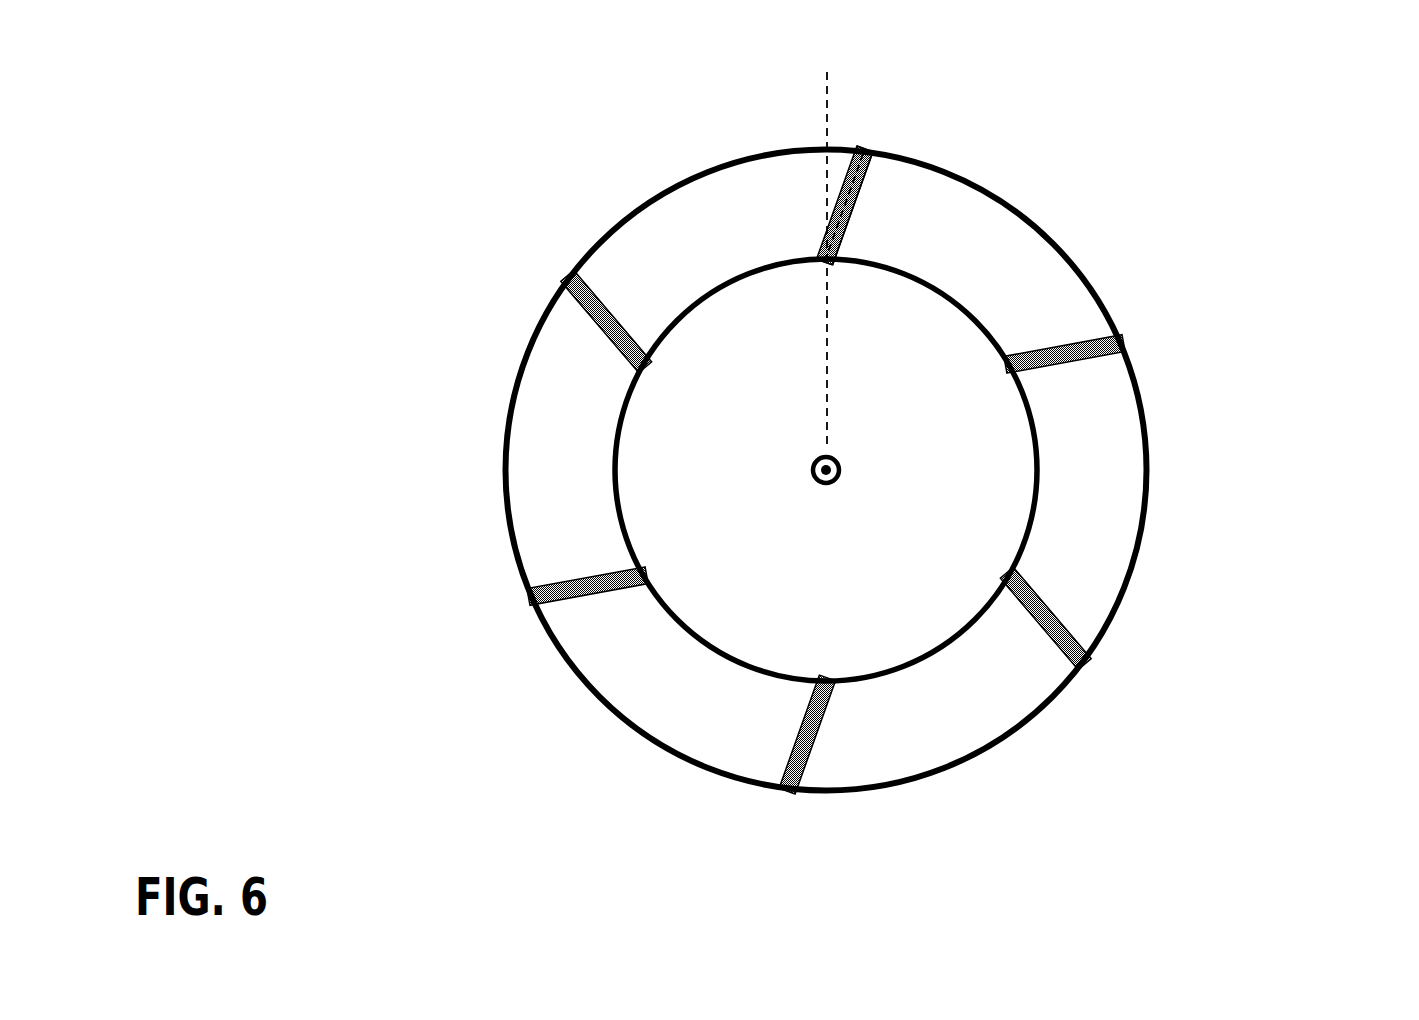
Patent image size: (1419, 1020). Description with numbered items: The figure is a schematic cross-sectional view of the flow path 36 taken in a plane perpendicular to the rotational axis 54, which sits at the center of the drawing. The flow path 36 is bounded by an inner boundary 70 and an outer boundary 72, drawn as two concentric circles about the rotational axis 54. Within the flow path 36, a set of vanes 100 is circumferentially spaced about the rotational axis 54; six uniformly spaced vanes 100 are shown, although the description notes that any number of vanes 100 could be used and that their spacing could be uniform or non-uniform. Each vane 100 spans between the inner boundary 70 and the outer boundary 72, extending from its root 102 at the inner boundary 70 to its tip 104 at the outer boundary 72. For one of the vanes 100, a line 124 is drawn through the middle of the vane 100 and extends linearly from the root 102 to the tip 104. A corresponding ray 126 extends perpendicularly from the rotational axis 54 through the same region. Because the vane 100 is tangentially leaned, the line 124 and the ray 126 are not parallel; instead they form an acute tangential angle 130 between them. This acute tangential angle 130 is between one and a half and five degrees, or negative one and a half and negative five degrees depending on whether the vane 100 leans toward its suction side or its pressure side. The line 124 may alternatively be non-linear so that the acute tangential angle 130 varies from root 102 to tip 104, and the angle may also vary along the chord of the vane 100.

The flow path 36 is at (401, 90).
The rotational axis 54 is at (843, 469).
The inner ring 70 is at (613, 420).
The outer ring 72 is at (617, 218).
The vane 100 is at (857, 202).
The root 102 is at (840, 250).
The tip 104 is at (872, 147).
The line 124 is at (957, 98).
The ray 126 is at (823, 110).
The acute tangential angle 130 is at (833, 203).